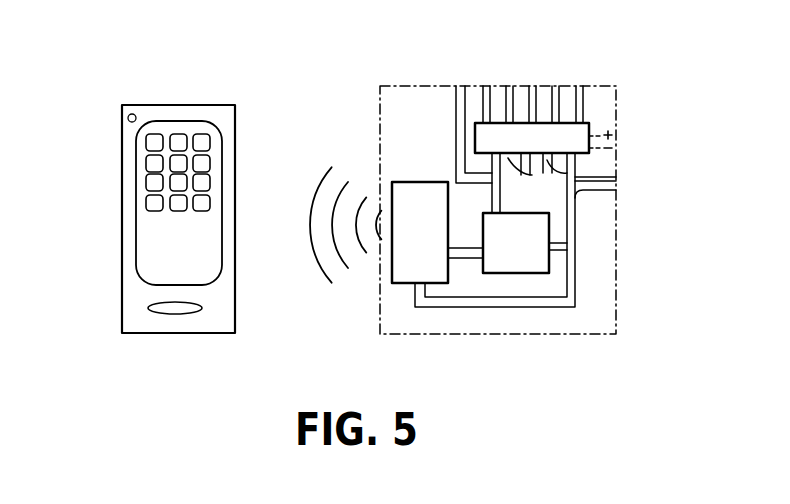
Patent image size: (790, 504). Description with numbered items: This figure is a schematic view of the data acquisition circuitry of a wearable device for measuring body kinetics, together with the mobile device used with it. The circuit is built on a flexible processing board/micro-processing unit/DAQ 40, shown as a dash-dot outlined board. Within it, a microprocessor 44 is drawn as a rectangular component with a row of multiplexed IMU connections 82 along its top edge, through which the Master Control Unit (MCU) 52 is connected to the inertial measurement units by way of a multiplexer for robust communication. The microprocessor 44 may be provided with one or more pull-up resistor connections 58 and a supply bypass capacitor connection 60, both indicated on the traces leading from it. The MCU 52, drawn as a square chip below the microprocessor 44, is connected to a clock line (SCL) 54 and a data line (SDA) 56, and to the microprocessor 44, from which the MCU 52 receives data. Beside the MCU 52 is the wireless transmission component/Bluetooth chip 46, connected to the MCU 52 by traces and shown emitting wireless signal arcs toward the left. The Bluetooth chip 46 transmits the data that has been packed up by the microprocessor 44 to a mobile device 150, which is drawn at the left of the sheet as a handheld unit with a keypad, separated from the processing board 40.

The mobile device 150 is at (122, 283).
The flexible processing board/micro-processing unit/DAQ 40 is at (405, 115).
The supply bypass capacitor connection 60 is at (490, 165).
The multiplexed IMU connections 82 is at (588, 80).
The microprocessor 44 is at (590, 122).
The pull-up resistor connections 58 is at (493, 158).
The data line (SDA) 56 is at (495, 198).
The clock line (SCL) 54 is at (503, 185).
The wireless transmission component/Bluetooth chip 46 is at (392, 279).
The Master Control Unit (MCU) 52 is at (532, 273).